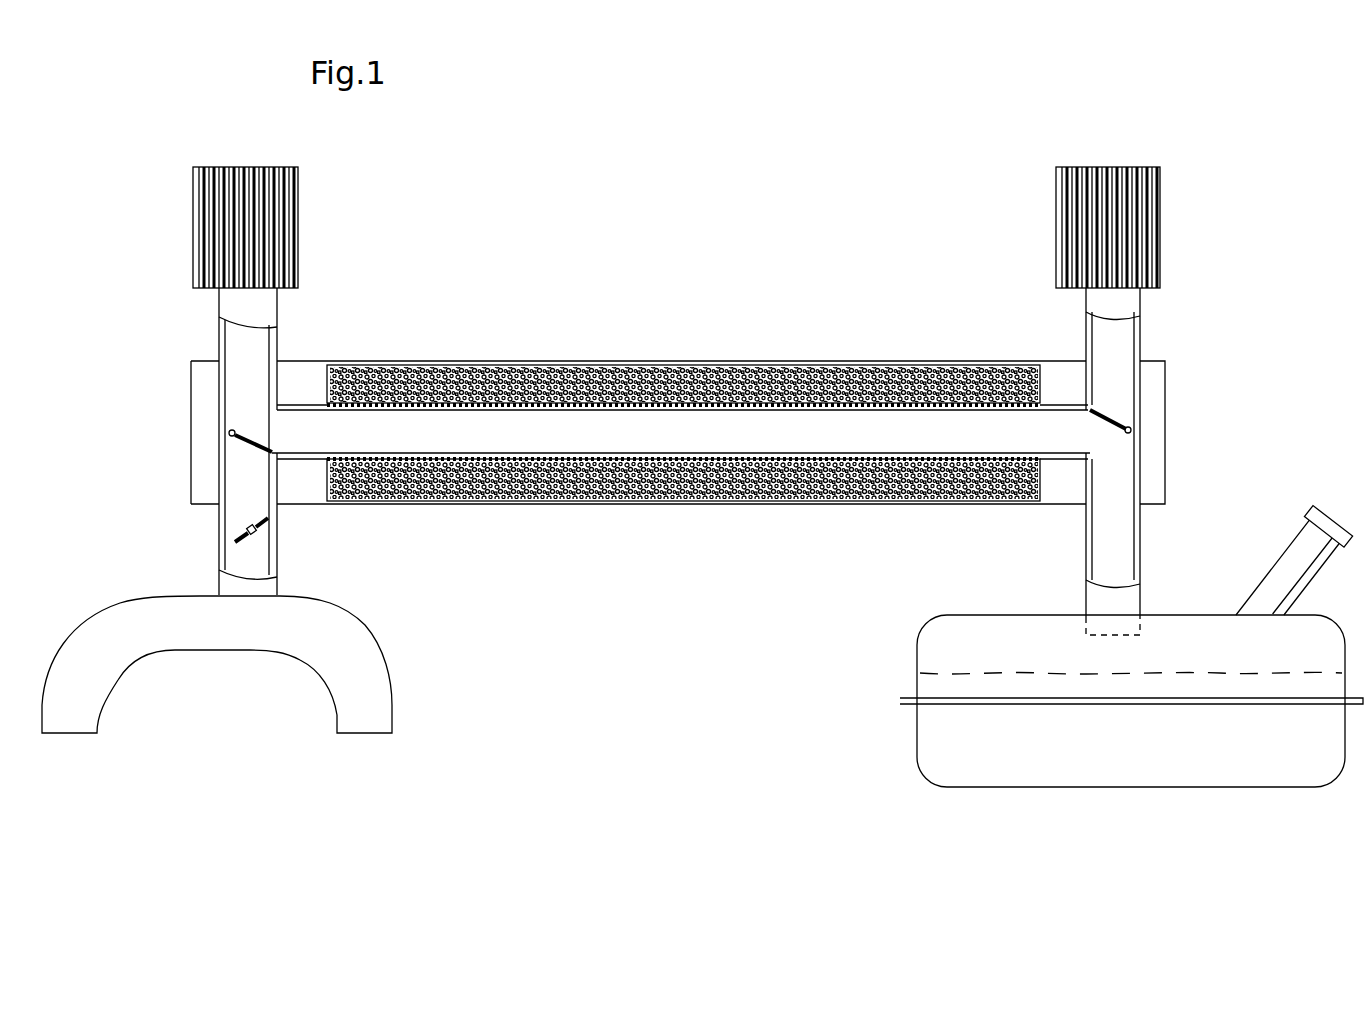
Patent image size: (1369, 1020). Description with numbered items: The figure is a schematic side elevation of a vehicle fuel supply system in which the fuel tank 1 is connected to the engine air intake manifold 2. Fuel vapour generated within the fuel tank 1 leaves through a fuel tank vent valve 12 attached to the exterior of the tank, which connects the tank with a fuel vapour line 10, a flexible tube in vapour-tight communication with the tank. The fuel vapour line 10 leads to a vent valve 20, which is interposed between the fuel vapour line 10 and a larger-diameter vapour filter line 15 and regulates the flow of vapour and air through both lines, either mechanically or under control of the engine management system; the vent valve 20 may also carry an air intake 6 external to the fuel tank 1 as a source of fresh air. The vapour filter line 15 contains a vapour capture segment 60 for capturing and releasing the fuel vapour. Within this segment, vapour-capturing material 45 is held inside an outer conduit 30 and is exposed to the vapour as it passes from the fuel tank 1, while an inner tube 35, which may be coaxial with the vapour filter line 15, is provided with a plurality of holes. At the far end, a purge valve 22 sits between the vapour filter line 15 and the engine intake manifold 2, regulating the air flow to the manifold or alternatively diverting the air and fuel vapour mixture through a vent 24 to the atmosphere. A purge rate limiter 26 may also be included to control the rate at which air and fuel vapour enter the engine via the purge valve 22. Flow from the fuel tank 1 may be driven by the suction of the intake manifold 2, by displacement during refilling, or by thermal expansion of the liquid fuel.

The fuel tank 1 is at (962, 662).
The engine air intake manifold 2 is at (223, 713).
The air intake 6 is at (1148, 307).
The fuel vapour line 10 is at (1101, 551).
The fuel tank vent valve 12 is at (1073, 627).
The vapour filter line 15 is at (288, 448).
The vent valve 20 is at (1101, 458).
The purge valve 22 is at (237, 427).
The vent 24 is at (197, 300).
The purge rate limiter 26 is at (232, 530).
The outer conduit 30 is at (680, 505).
The inner tube 35 is at (490, 455).
The vapour-capturing material 45 is at (752, 368).
The vapour capture segment 60 is at (833, 360).